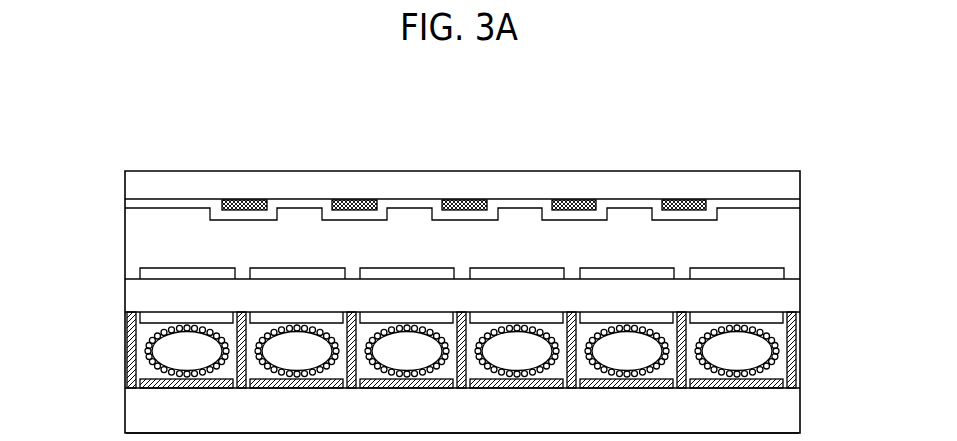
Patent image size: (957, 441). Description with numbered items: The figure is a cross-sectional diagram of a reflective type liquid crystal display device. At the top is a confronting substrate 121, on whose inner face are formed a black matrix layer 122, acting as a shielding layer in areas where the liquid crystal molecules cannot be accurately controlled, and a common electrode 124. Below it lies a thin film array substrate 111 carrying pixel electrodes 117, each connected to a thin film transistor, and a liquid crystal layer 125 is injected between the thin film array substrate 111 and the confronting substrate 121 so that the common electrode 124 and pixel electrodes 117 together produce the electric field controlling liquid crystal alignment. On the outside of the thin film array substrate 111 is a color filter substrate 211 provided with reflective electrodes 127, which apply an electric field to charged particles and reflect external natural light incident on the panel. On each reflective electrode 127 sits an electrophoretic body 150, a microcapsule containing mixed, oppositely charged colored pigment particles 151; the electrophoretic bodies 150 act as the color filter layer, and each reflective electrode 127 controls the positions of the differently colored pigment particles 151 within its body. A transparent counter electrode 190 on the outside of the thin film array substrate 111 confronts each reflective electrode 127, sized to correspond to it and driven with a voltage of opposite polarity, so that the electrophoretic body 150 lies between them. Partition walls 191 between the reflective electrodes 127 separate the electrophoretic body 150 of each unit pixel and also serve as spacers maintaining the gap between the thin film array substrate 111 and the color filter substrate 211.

The confronting substrate 121 is at (800, 188).
The black matrix layer 122 is at (352, 200).
The common electrode 124 is at (133, 203).
The liquid crystal layer 125 is at (800, 249).
The pixel electrode 117 is at (141, 271).
The thin film array substrate 111 is at (800, 293).
The counter electrode 190 is at (770, 322).
The partition wall 191 is at (792, 357).
The electrophoretic body 150 is at (160, 347).
The pigment particles 151 is at (146, 361).
The reflective electrode 127 is at (773, 387).
The color filter substrate 211 is at (793, 415).